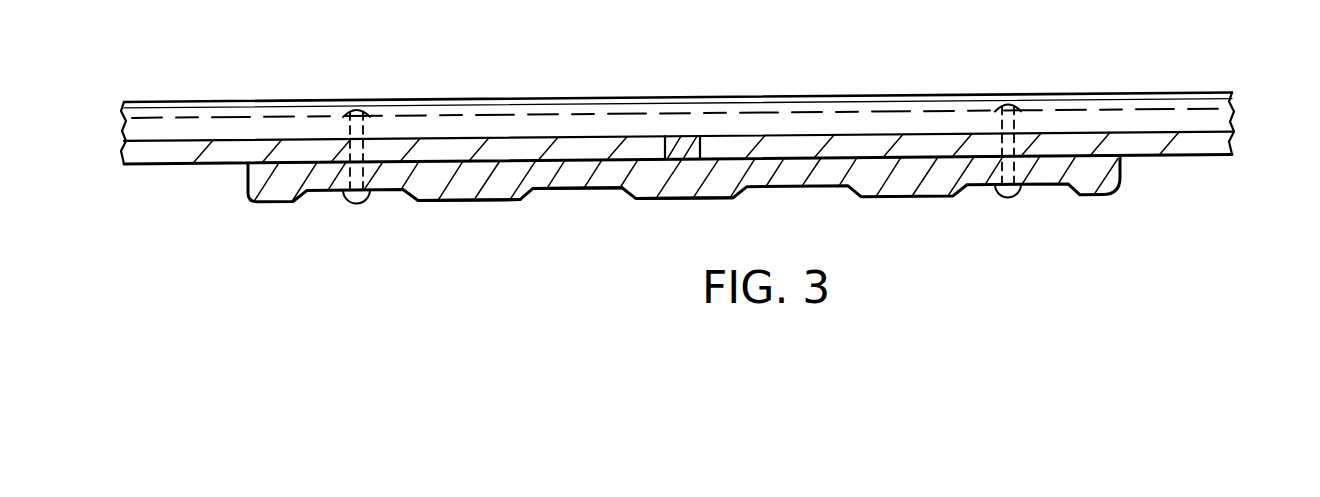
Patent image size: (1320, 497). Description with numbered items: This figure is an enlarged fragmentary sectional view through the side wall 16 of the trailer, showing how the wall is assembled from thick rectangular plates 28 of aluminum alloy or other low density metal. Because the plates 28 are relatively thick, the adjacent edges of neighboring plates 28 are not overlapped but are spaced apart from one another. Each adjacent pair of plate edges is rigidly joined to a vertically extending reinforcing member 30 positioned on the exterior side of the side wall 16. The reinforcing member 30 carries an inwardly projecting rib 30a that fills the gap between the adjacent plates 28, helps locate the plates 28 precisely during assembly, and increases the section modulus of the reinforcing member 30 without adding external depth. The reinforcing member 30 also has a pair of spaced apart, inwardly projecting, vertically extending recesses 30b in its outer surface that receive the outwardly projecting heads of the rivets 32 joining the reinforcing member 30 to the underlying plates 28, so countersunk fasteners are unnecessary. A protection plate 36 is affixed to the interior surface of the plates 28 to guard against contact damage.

The side wall 16 is at (162, 157).
The rectangular plates 28 is at (443, 140).
The reinforcing member 30 is at (923, 197).
The inwardly projecting rib 30a is at (690, 153).
The recesses 30b is at (573, 190).
The rivets 32 is at (358, 203).
The protection plates 36 is at (320, 122).